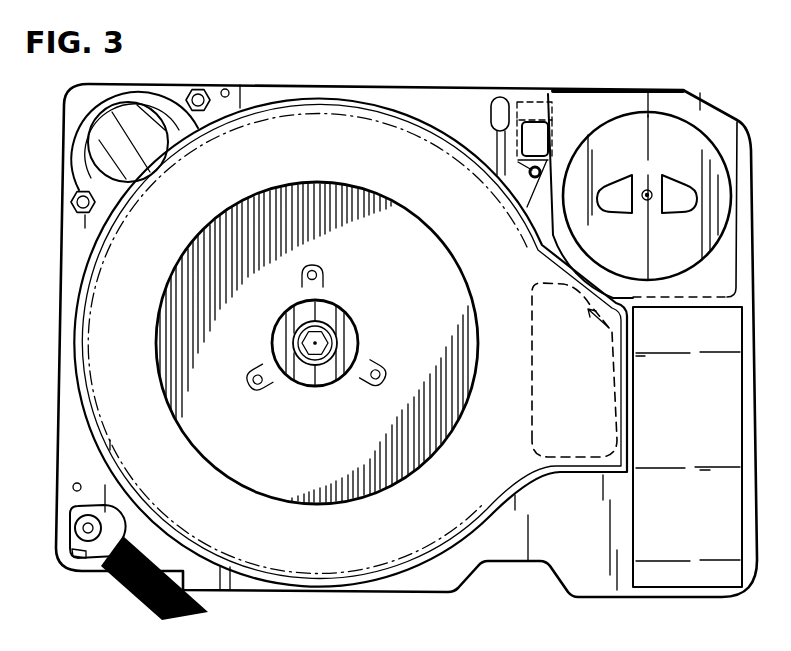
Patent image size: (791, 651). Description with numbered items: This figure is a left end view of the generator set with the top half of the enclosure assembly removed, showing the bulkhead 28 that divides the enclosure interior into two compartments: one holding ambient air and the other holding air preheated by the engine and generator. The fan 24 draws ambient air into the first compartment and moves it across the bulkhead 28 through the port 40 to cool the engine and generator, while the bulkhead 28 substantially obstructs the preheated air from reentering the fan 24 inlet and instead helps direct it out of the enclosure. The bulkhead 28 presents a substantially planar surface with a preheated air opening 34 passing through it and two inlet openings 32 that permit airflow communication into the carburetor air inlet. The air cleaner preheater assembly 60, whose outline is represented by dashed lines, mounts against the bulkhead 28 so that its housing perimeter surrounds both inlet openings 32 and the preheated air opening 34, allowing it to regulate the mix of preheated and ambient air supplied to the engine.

The fan 24 is at (367, 185).
The bulkhead 28 is at (377, 95).
The inlet opening 32 is at (626, 207).
The preheated air opening 34 is at (535, 140).
The port 40 is at (592, 404).
The air cleaner preheater assembly 60 is at (697, 82).